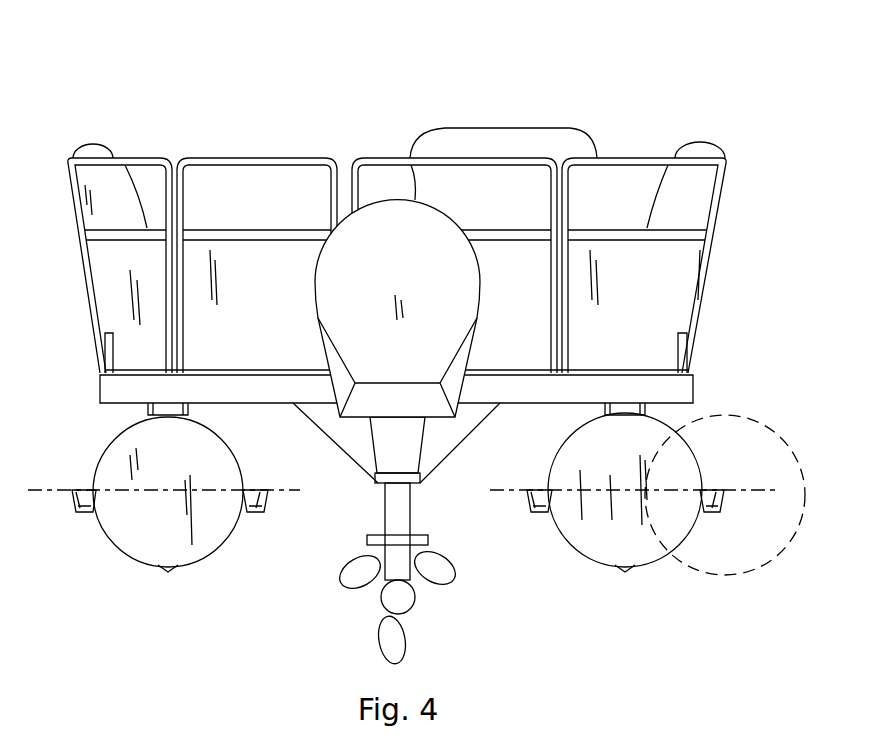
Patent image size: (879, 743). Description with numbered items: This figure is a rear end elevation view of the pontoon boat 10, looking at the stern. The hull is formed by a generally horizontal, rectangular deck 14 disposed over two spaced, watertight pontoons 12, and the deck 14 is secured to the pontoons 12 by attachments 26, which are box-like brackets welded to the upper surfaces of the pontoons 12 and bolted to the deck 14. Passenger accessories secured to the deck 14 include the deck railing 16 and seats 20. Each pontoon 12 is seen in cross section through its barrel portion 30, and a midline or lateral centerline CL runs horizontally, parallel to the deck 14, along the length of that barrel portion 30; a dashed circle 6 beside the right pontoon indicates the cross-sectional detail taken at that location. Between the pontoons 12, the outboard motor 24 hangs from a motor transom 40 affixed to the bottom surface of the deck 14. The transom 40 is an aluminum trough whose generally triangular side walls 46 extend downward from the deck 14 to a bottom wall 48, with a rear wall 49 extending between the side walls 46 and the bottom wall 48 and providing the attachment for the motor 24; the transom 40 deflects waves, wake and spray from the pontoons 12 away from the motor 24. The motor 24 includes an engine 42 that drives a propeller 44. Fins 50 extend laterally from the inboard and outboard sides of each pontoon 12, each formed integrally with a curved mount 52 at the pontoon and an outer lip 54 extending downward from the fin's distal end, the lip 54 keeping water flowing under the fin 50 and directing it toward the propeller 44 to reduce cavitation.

The pontoon boat 10 is at (606, 79).
The pontoon 12 is at (221, 545).
The deck 14 is at (693, 390).
The deck railing 16 is at (88, 253).
The seats 20 is at (103, 146).
The outboard motor 24 is at (366, 208).
The attachments 26 is at (150, 410).
The barrel portion 30 is at (148, 547).
The motor transom 40 is at (446, 442).
The engine 42 is at (385, 364).
The propeller 44 is at (418, 605).
The side walls 46 is at (330, 442).
The bottom wall 48 is at (377, 482).
The rear wall 49 is at (347, 458).
The fins 50 is at (256, 490).
The curved mount 52 is at (244, 490).
The outer lip 54 is at (78, 512).
The pontoon cross-section reference circle 6 is at (762, 565).
The lateral centerline CL is at (40, 489).